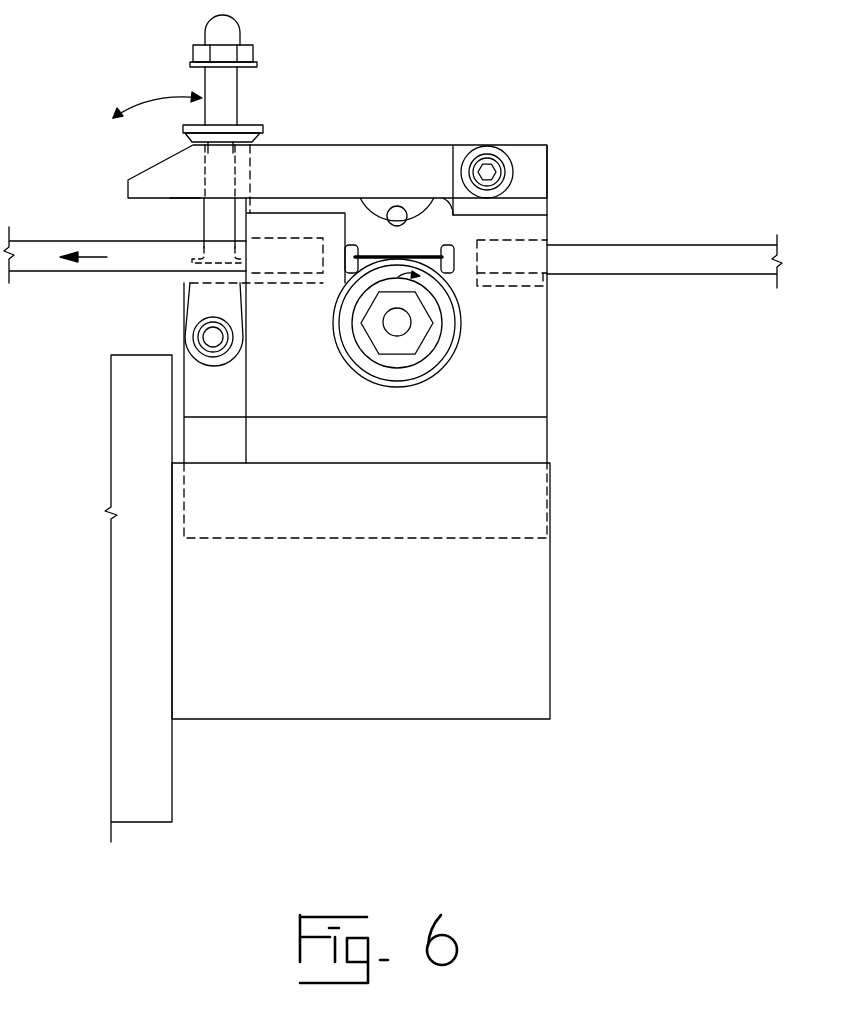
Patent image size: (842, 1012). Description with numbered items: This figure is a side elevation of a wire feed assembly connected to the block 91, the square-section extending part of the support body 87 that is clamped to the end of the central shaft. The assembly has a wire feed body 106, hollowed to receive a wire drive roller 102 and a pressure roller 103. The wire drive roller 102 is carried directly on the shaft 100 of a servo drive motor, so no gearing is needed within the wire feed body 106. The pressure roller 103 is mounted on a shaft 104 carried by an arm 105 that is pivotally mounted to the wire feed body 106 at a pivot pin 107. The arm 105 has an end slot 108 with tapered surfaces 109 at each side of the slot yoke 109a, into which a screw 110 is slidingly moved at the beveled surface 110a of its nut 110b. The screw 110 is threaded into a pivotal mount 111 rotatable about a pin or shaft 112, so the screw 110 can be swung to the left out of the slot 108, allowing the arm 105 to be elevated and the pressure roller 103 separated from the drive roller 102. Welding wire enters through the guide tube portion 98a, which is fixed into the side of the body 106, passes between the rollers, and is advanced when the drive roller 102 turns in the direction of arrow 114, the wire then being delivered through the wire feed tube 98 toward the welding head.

The support body 87 is at (140, 822).
The extending part (block) 91 is at (550, 600).
The wire feed tube 98 is at (82, 218).
The wire guide tube portion 98a is at (628, 245).
The motor shaft 100 is at (397, 336).
The wire drive roller 102 is at (453, 348).
The pressure roller 103 is at (450, 207).
The pressure roller shaft 104 is at (400, 207).
The arm 105 is at (373, 145).
The wire feed body 106 is at (547, 328).
The pivot pin 107 is at (497, 157).
The end slot 108 is at (250, 168).
The tapered surfaces 109 is at (157, 166).
The slot yoke 109a is at (183, 198).
The screw 110 is at (237, 90).
The beveled surface 110a is at (258, 138).
The nut 110b is at (250, 123).
The pivotal mount 111 is at (200, 299).
The pin or shaft 112 is at (232, 352).
The arrow 114 is at (92, 258).